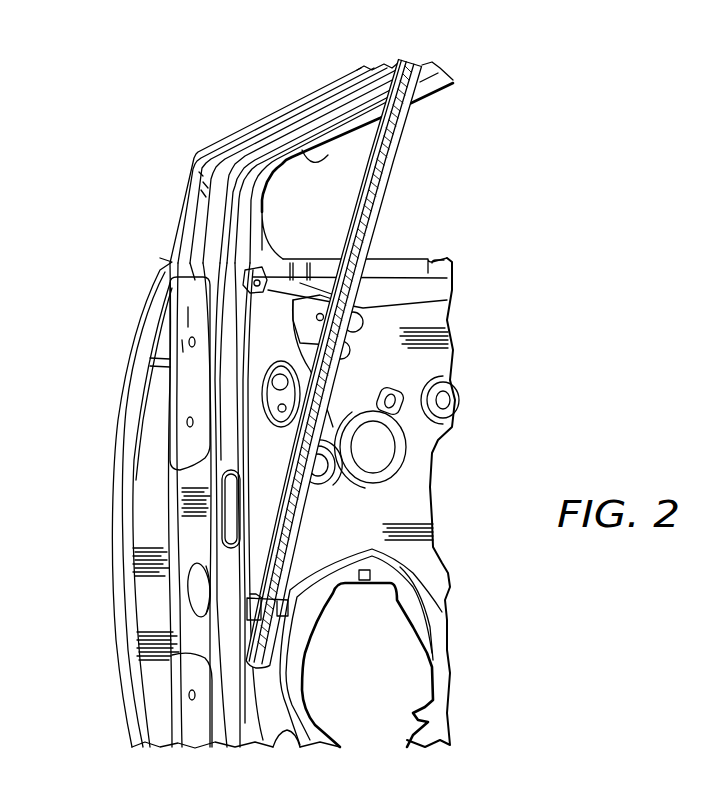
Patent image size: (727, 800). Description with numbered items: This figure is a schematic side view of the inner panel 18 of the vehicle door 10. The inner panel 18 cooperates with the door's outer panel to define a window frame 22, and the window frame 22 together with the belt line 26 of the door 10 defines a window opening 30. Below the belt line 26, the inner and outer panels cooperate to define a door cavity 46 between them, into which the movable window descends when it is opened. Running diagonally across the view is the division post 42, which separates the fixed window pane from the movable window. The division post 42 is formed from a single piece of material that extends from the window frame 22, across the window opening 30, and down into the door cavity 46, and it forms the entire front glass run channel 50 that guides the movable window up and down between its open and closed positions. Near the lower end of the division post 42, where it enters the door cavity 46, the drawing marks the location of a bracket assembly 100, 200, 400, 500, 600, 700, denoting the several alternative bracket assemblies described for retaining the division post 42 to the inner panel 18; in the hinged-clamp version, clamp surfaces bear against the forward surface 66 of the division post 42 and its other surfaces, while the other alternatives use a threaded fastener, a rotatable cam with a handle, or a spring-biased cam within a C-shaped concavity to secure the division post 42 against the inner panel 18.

The vehicle door 10 is at (150, 118).
The inner panel 18 is at (160, 263).
The window frame 22 is at (322, 93).
The belt line 26 is at (412, 256).
The window opening 30 is at (304, 162).
The division post 42 is at (390, 118).
The door cavity 46 is at (407, 497).
The front glass run channel 50 is at (332, 427).
The forward surface 66 is at (283, 468).
The bracket assembly 100 is at (287, 608).
The clip 200 is at (398, 651).
The bracket assembly 400 is at (398, 651).
The bracket assembly 500 is at (398, 651).
The bracket assembly 600 is at (397, 651).
The bracket assembly 700 is at (397, 651).